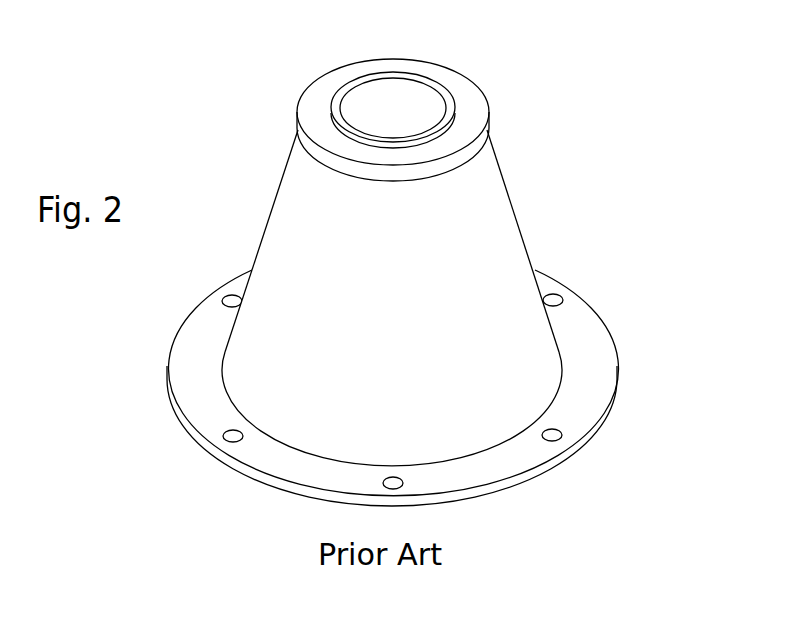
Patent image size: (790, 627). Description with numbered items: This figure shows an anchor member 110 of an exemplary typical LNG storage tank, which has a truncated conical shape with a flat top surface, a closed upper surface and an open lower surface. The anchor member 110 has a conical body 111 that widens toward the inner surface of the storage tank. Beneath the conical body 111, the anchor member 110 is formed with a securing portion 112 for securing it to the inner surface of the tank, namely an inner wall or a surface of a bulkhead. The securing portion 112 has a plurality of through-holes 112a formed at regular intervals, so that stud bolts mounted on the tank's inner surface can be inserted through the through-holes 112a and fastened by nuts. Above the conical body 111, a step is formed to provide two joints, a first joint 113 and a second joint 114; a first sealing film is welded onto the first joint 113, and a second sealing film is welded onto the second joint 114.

The anchor member 110 is at (254, 111).
The conical body 111 is at (517, 224).
The securing portion 112 is at (597, 349).
The through-holes 112a is at (223, 433).
The first joint 113 is at (418, 77).
The second joint 114 is at (475, 113).